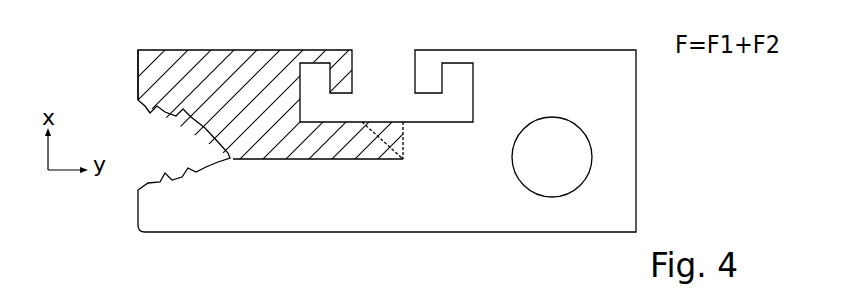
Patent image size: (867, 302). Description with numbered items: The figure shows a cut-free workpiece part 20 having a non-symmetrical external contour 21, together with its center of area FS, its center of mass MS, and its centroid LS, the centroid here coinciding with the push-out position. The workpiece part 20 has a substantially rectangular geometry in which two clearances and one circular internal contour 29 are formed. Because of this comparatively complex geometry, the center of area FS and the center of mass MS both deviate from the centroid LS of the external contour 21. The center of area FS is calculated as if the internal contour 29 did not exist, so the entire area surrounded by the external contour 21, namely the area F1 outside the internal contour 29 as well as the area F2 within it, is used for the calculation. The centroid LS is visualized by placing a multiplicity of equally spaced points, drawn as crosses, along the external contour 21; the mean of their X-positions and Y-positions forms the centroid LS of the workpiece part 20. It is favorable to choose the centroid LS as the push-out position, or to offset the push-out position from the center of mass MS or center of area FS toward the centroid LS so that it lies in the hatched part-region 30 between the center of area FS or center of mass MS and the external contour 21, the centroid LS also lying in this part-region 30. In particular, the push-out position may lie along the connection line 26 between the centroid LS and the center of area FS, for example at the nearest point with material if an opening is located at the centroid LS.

The workpiece part 20 is at (568, 80).
The external contour 21 is at (137, 69).
The connection line 26 is at (398, 143).
The internal contour 29 is at (593, 147).
The part-region 30 is at (182, 63).
The area outside the internal contour F1 is at (603, 200).
The area within the internal contour F2 is at (563, 140).
The center of area FS is at (407, 160).
The center of mass MS is at (380, 160).
The centroid LS is at (362, 120).